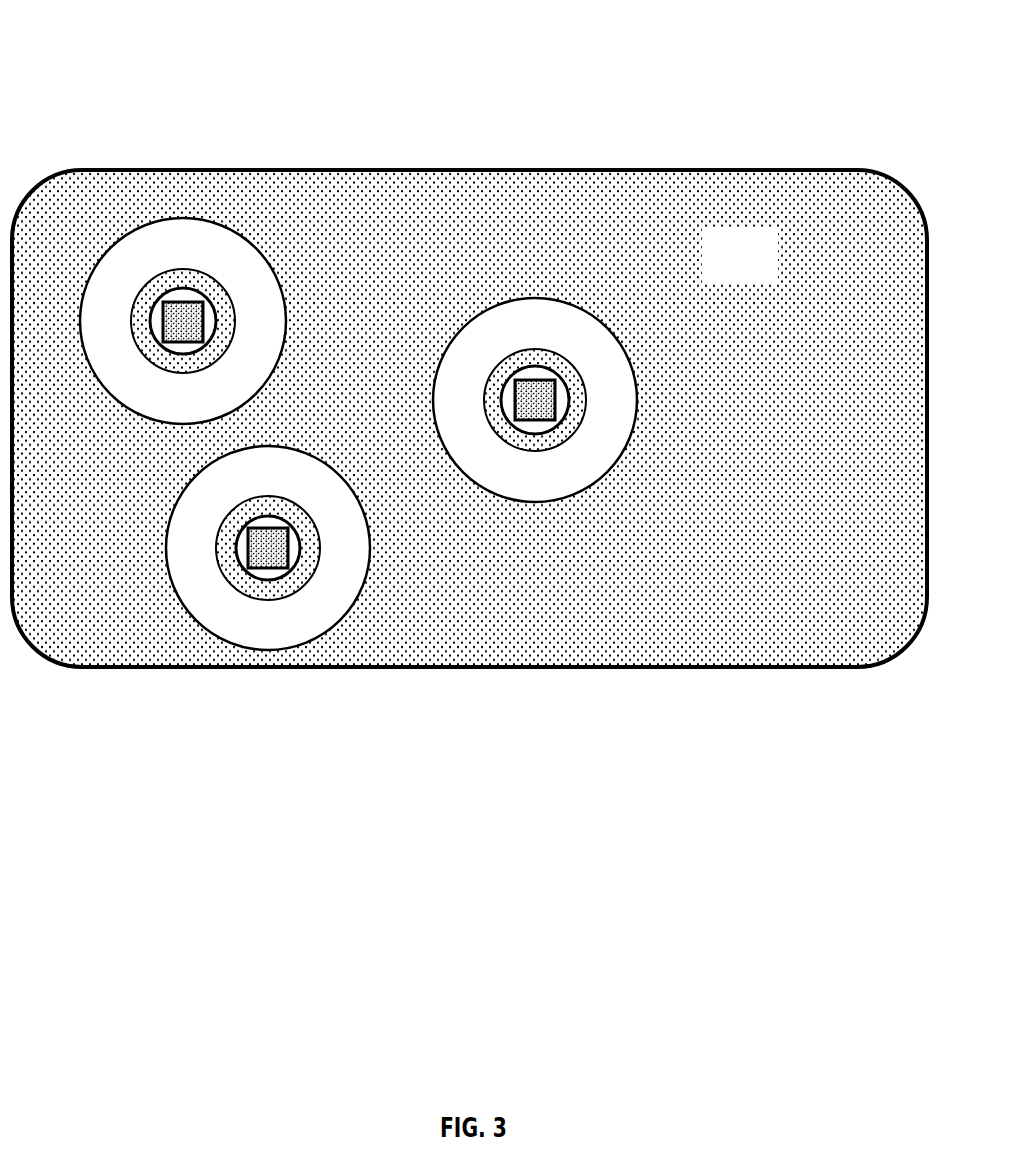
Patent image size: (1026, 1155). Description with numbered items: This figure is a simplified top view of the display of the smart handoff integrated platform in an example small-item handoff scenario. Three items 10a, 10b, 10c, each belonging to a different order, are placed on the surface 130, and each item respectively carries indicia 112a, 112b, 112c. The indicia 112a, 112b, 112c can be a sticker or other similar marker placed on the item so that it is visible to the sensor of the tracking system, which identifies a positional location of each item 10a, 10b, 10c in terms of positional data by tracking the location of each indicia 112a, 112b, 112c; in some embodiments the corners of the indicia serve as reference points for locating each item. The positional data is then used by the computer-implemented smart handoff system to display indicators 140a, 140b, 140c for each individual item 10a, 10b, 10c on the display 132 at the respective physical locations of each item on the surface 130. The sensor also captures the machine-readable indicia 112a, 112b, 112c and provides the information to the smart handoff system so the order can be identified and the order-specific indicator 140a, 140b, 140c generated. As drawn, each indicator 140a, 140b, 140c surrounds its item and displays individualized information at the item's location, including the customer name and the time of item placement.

The surface 130 is at (806, 128).
The display 132 is at (761, 272).
The item 10a is at (165, 293).
The item 10b is at (233, 560).
The item 10c is at (525, 366).
The indicia 112a is at (175, 302).
The indicia 112b is at (267, 567).
The indicia 112c is at (537, 380).
The indicator 140a is at (200, 250).
The indicator 140b is at (218, 620).
The indicator 140c is at (558, 333).